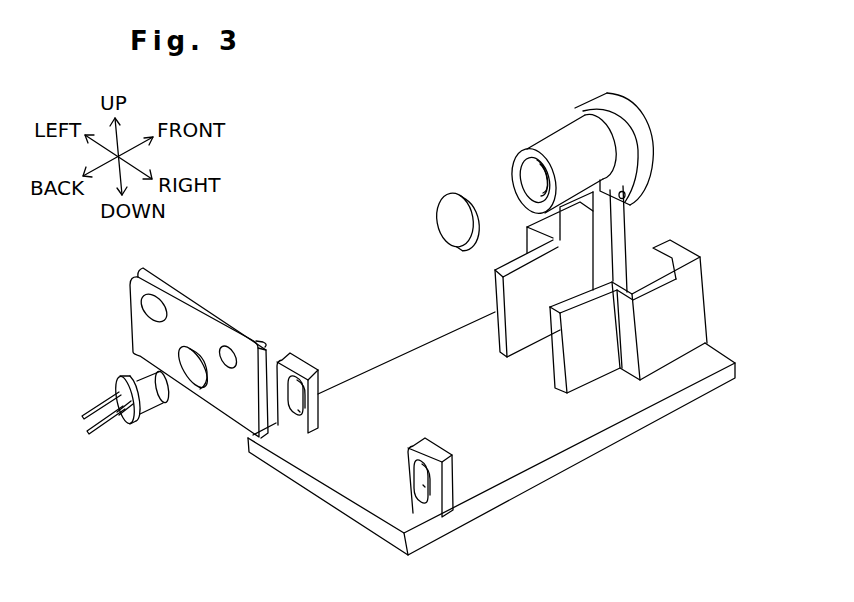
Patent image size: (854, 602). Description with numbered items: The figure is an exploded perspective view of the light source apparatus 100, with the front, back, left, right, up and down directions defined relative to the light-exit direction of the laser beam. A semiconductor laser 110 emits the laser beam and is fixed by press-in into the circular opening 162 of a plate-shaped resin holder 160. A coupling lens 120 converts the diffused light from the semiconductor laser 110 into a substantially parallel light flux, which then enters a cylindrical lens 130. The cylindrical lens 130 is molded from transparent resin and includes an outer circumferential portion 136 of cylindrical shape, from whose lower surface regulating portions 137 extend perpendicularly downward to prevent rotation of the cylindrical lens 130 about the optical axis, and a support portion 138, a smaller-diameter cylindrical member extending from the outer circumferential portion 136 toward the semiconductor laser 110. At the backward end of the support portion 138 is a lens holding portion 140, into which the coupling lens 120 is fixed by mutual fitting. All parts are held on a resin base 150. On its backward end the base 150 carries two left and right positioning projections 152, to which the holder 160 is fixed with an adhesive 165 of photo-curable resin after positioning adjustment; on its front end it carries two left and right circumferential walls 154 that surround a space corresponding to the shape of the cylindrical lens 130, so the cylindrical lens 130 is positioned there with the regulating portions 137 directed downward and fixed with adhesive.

The light source apparatus 100 is at (287, 157).
The semiconductor laser 110 is at (150, 417).
The coupling lens 120 is at (445, 215).
The cylindrical lens 130 is at (589, 144).
The outer circumferential portion 136 is at (620, 112).
The regulating portions 137 is at (643, 170).
The support portion 138 is at (548, 148).
The lens holding portion 140 is at (532, 178).
The base 150 is at (620, 445).
The positioning projections 152 is at (297, 367).
The circumferential walls 154 is at (623, 212).
The holder 160 is at (167, 288).
The circular opening 162 is at (193, 360).
The adhesive 165 is at (298, 410).